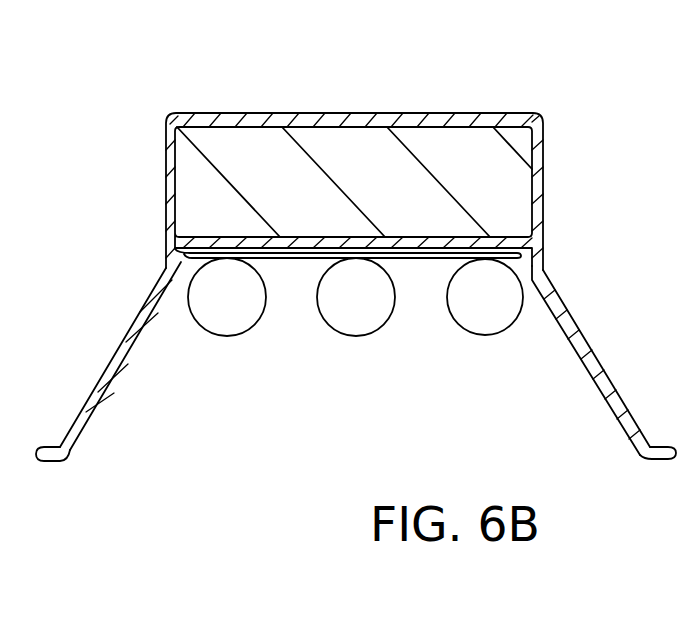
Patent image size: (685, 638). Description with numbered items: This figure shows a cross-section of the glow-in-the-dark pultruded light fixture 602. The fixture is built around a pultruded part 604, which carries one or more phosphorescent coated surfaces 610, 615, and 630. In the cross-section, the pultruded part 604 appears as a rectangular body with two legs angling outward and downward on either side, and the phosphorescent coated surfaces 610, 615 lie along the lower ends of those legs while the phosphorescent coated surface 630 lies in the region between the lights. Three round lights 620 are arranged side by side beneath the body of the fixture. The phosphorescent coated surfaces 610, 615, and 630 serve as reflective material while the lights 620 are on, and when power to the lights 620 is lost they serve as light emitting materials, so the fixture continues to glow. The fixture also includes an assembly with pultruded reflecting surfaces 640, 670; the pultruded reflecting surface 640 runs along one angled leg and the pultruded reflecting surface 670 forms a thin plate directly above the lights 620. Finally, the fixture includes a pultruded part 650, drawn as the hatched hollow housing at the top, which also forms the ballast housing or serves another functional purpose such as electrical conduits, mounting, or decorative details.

The light fixture 602 is at (528, 92).
The pultruded part 650 is at (545, 152).
The pultruded reflecting surface 670 is at (228, 250).
The lights 620 is at (487, 337).
The phosphorescent coated surface 630 is at (288, 260).
The pultruded part 604 is at (152, 308).
The phosphorescent coated surface 610 is at (105, 408).
The pultruded reflecting surface 640 is at (585, 336).
The phosphorescent coated surface 615 is at (600, 407).